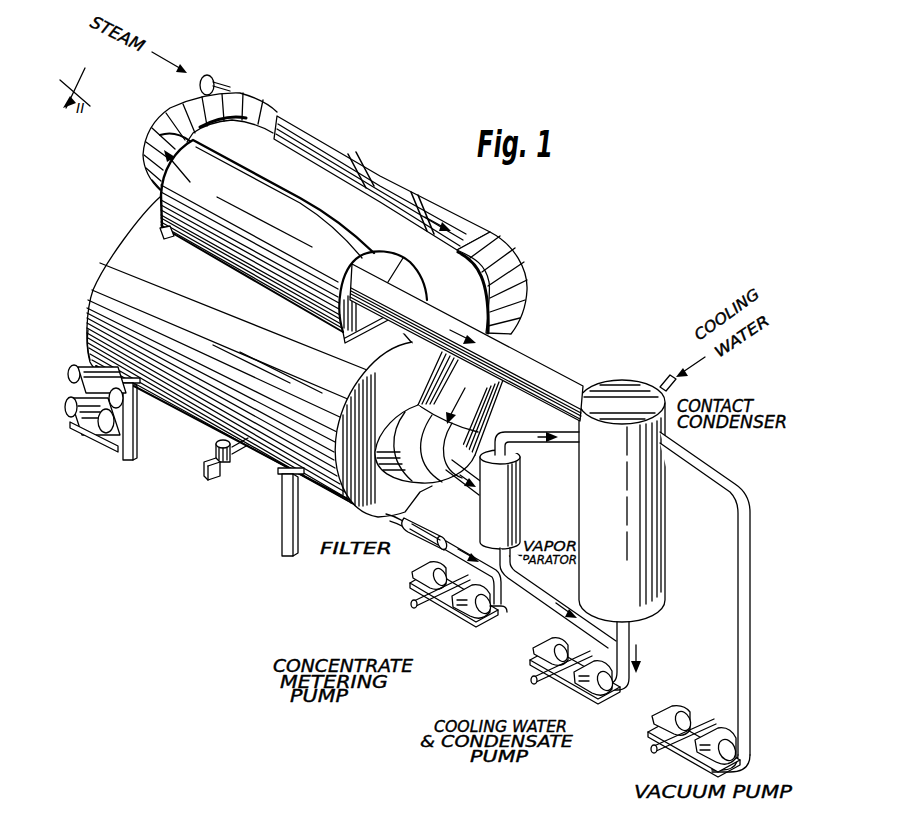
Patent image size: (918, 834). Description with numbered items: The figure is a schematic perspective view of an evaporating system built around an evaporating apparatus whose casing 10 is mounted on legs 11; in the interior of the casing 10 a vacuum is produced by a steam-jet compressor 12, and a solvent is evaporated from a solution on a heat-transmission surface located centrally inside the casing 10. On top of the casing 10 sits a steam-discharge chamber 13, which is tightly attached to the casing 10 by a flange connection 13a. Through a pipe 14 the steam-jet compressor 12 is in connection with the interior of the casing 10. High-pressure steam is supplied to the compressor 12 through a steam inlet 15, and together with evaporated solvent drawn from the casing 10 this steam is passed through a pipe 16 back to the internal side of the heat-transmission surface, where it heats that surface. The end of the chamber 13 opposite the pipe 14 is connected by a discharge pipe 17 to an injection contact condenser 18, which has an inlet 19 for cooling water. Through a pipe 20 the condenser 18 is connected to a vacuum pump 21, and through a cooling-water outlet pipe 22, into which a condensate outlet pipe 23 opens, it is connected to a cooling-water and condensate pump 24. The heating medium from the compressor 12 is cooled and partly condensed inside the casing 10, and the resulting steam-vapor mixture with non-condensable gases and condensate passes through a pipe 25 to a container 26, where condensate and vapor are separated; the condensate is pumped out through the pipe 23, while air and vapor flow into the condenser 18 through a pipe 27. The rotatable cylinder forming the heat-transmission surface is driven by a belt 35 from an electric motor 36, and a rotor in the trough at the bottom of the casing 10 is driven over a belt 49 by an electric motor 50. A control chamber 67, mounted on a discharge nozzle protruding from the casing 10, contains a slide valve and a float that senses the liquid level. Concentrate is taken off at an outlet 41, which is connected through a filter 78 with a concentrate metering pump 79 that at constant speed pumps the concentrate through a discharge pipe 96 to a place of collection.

The casing 10 is at (117, 300).
The legs 11 is at (123, 457).
The steam-jet compressor 12 is at (354, 163).
The steam-discharge chamber 13 is at (160, 192).
The flange connection 13a is at (160, 237).
The pipe 14 is at (143, 133).
The steam inlet 15 is at (215, 92).
The pipe 16 is at (528, 302).
The discharge pipe 17 is at (562, 378).
The injection contact condenser 18 is at (667, 534).
The cooling water inlet 19 is at (664, 378).
The pipe 20 is at (751, 598).
The vacuum pump 21 is at (692, 762).
The cooling-water outlet pipe 22 is at (633, 626).
The condensate outlet pipe 23 is at (562, 613).
The cooling-water and condensate pump 24 is at (588, 692).
The pipe 25 is at (478, 493).
The container 26 is at (526, 500).
The pipe 27 is at (524, 440).
The belt 35 is at (88, 341).
The electric motor 36 is at (78, 390).
The outlet 41 is at (390, 524).
The belt 49 is at (70, 378).
The electric motor 50 is at (80, 424).
The control chamber 67 is at (229, 462).
The filter 78 is at (412, 540).
The concentrate metering pump 79 is at (470, 620).
The discharge pipe 96 is at (445, 604).